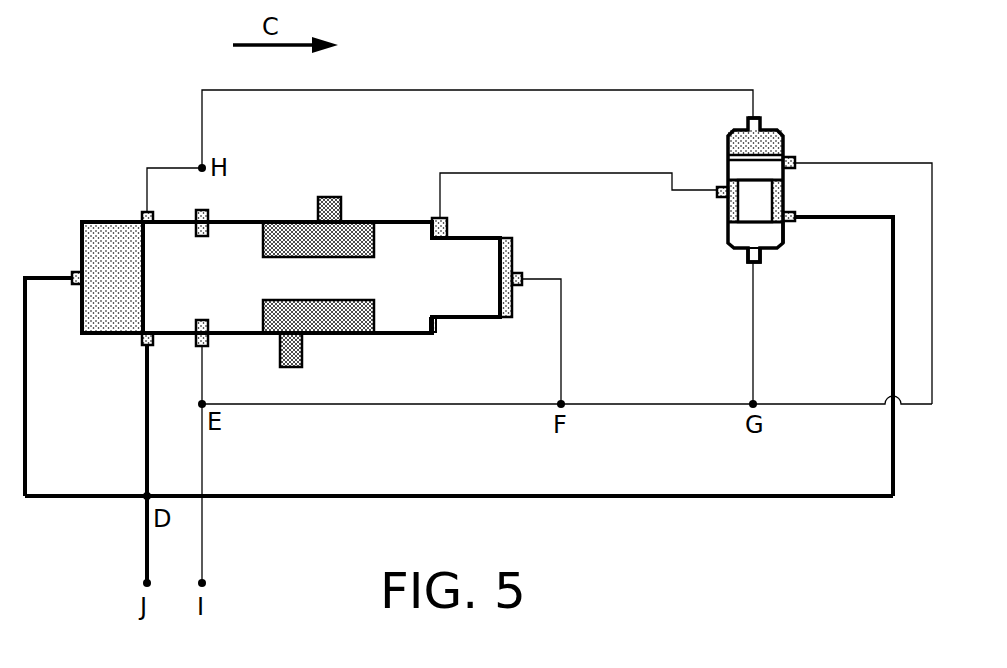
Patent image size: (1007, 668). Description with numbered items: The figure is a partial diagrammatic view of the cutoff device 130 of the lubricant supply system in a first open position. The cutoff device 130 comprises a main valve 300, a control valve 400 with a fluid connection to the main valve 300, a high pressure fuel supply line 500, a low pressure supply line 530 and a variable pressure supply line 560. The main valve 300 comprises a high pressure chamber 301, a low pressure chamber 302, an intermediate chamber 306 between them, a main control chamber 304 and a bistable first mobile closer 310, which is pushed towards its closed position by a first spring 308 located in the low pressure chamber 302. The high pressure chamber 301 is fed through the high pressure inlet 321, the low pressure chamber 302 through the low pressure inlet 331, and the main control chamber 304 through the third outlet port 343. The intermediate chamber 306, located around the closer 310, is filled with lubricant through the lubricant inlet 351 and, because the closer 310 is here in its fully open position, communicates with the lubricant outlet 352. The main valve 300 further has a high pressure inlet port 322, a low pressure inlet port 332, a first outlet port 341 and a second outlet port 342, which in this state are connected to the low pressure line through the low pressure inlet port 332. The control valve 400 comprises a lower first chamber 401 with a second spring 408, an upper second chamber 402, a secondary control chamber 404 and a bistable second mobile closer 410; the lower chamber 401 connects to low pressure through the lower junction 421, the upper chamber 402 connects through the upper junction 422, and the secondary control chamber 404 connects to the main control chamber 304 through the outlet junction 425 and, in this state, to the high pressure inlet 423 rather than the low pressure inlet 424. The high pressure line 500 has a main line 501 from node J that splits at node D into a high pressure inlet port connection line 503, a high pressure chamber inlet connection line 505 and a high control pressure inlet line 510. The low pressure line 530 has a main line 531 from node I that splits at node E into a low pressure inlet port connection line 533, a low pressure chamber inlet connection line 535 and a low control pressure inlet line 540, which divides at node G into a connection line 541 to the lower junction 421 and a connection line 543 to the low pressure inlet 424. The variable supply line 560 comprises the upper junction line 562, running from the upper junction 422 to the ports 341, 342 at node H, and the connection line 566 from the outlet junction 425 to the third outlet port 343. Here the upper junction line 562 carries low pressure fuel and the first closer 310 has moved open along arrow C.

The cutoff device 130 is at (98, 108).
The main valve 300 is at (311, 246).
The high pressure chamber 301 is at (107, 258).
The low pressure chamber 302 is at (508, 258).
The main control chamber 304 is at (397, 222).
The intermediate chamber 306 is at (298, 222).
The first spring 308 is at (508, 317).
The first mobile closer 310 is at (162, 283).
The high pressure inlet 321 is at (72, 278).
The high pressure inlet port 322 is at (141, 346).
The low pressure inlet 331 is at (522, 278).
The low pressure inlet port 332 is at (207, 347).
The first outlet port 341 is at (146, 212).
The second outlet port 342 is at (197, 210).
The third outlet port 343 is at (447, 225).
The lubricant inlet 351 is at (303, 353).
The lubricant outlet 352 is at (335, 197).
The control valve 400 is at (757, 162).
The first chamber 401 is at (787, 247).
The second chamber 402 is at (777, 147).
The secondary control chamber 404 is at (787, 185).
The second spring 408 is at (735, 247).
The second mobile closer 410 is at (752, 200).
The lower junction 421 is at (752, 262).
The upper junction 422 is at (748, 123).
The high pressure inlet 423 is at (792, 220).
The low pressure inlet 424 is at (788, 157).
The outlet junction 425 is at (720, 198).
The high pressure fuel supply line 500 is at (262, 507).
The main line 501 is at (147, 517).
The high pressure inlet port connection line 503 is at (145, 437).
The high pressure chamber inlet connection line 505 is at (32, 407).
The high control pressure inlet line 510 is at (652, 498).
The low pressure supply line 530 is at (745, 416).
The main line 531 is at (205, 435).
The low pressure inlet port connection line 533 is at (202, 368).
The low pressure chamber inlet connection line 535 is at (563, 353).
The low control pressure inlet line 540 is at (648, 408).
The connection line from the lower junction 541 is at (756, 307).
The connection line from the low pressure inlet 543 is at (932, 253).
The variable pressure supply line 560 is at (527, 68).
The upper junction line 562 is at (405, 90).
The connection line 566 is at (507, 172).